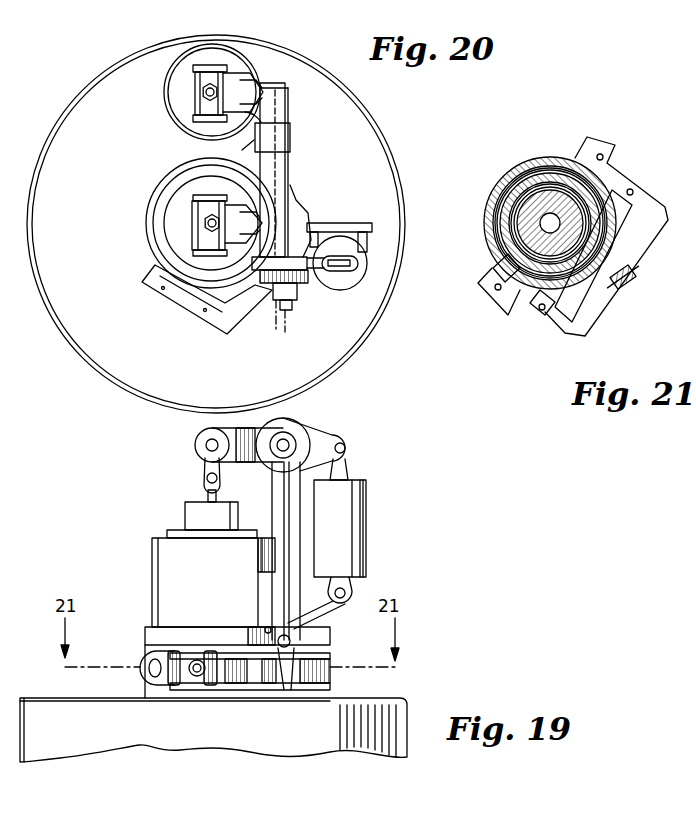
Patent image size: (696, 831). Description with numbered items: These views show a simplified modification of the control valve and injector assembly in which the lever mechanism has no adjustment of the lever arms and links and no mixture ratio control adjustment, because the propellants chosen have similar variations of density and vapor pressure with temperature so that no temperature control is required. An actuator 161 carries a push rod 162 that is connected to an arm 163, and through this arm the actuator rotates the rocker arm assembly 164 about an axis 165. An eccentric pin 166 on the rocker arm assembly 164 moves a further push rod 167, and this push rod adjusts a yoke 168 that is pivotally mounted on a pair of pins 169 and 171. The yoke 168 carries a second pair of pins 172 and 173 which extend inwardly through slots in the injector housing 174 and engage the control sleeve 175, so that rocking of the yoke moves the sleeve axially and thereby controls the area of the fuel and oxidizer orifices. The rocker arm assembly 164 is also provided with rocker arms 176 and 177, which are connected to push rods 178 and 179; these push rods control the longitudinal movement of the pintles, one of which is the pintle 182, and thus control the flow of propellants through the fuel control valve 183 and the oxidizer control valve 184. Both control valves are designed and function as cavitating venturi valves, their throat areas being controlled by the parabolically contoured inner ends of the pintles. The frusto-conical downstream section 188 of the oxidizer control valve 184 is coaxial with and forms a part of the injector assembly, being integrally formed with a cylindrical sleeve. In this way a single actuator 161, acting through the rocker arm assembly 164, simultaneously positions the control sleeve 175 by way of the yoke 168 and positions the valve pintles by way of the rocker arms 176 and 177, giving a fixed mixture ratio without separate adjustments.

In FIG. 20, the actuator 161 is at (366, 250).
In FIG. 19, the actuator 161 is at (366, 540).
In FIG. 20, the push rod 162 is at (350, 278).
In FIG. 19, the push rod 162 is at (350, 470).
In FIG. 20, the arm 163 is at (310, 282).
In FIG. 19, the arm 163 is at (322, 434).
In FIG. 20, the rocker arm assembly 164 is at (298, 166).
In FIG. 19, the rocker arm assembly 164 is at (287, 420).
In FIG. 20, the axis 165 is at (275, 322).
In FIG. 20, the eccentric pin 166 is at (289, 322).
In FIG. 19, the eccentric pin 166 is at (277, 455).
In FIG. 20, the push rod 167 is at (301, 300).
In FIG. 19, the push rod 167 is at (275, 590).
In FIG. 20, the yoke 168 is at (198, 318).
In FIG. 21, the yoke 168 is at (620, 152).
In FIG. 19, the yoke 168 is at (147, 641).
In FIG. 21, the pin 169 is at (547, 302).
In FIG. 19, the pin 169 is at (197, 680).
In FIG. 21, the pin 171 is at (628, 205).
In FIG. 21, the pin 172 is at (500, 250).
In FIG. 19, the pin 172 is at (140, 674).
In FIG. 21, the pin 173 is at (570, 170).
In FIG. 21, the injector housing 174 is at (502, 174).
In FIG. 19, the injector housing 174 is at (152, 632).
In FIG. 21, the control sleeve 175 is at (530, 185).
In FIG. 20, the rocker arm 176 is at (240, 85).
In FIG. 20, the rocker arm 177 is at (212, 165).
In FIG. 19, the rocker arm 177 is at (196, 434).
In FIG. 20, the push rod 178 is at (203, 92).
In FIG. 20, the push rod 179 is at (190, 223).
In FIG. 19, the push rod 179 is at (203, 470).
In FIG. 19, the pintle 182 is at (206, 500).
In FIG. 20, the fuel control valve 183 is at (170, 110).
In FIG. 20, the oxidizer control valve 184 is at (172, 245).
In FIG. 21, the frusto-conical downstream section 188 is at (550, 213).